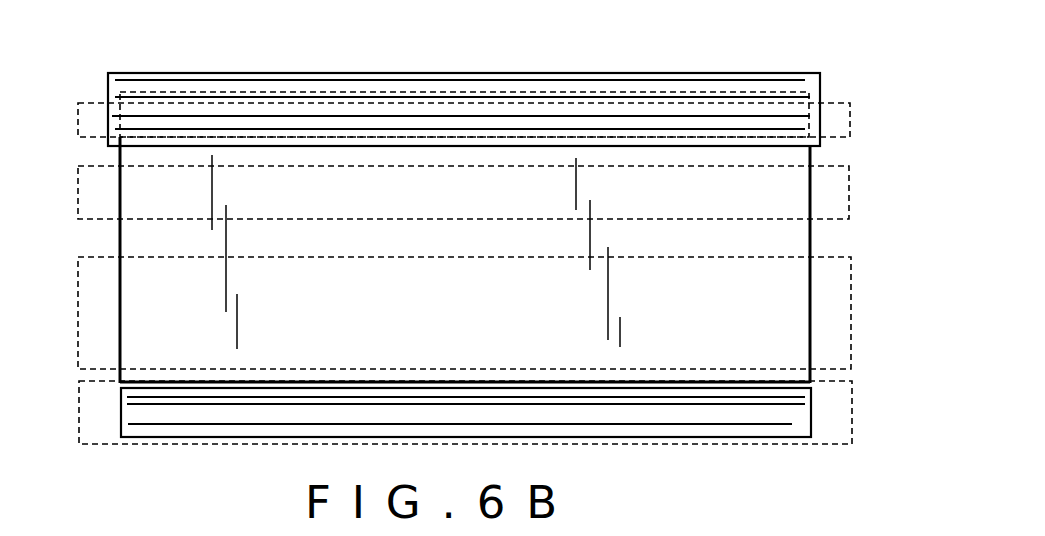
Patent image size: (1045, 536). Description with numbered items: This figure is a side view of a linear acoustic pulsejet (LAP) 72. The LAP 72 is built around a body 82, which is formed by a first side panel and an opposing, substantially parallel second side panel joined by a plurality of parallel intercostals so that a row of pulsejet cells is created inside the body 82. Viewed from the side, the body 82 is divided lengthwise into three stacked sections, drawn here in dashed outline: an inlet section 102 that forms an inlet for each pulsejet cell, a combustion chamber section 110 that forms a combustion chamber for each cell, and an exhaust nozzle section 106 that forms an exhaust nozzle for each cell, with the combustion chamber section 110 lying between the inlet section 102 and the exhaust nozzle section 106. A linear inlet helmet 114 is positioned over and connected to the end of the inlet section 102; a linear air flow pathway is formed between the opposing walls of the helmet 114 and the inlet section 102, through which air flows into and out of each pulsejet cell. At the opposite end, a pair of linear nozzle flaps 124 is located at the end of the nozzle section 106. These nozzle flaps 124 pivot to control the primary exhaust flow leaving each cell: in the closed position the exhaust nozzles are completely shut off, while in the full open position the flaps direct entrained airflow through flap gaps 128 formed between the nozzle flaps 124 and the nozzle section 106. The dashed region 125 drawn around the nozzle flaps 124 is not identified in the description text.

The linear acoustic pulsejet 72 is at (652, 50).
The linear inlet helmet 114 is at (702, 73).
The inlet section 102 is at (850, 131).
The combustion chamber section 110 is at (849, 183).
The exhaust nozzle section 106 is at (851, 318).
The body 82 is at (468, 250).
The flap gaps 128 is at (120, 383).
The lower dashed region 125 is at (852, 418).
The linear nozzle flaps 124 is at (193, 423).